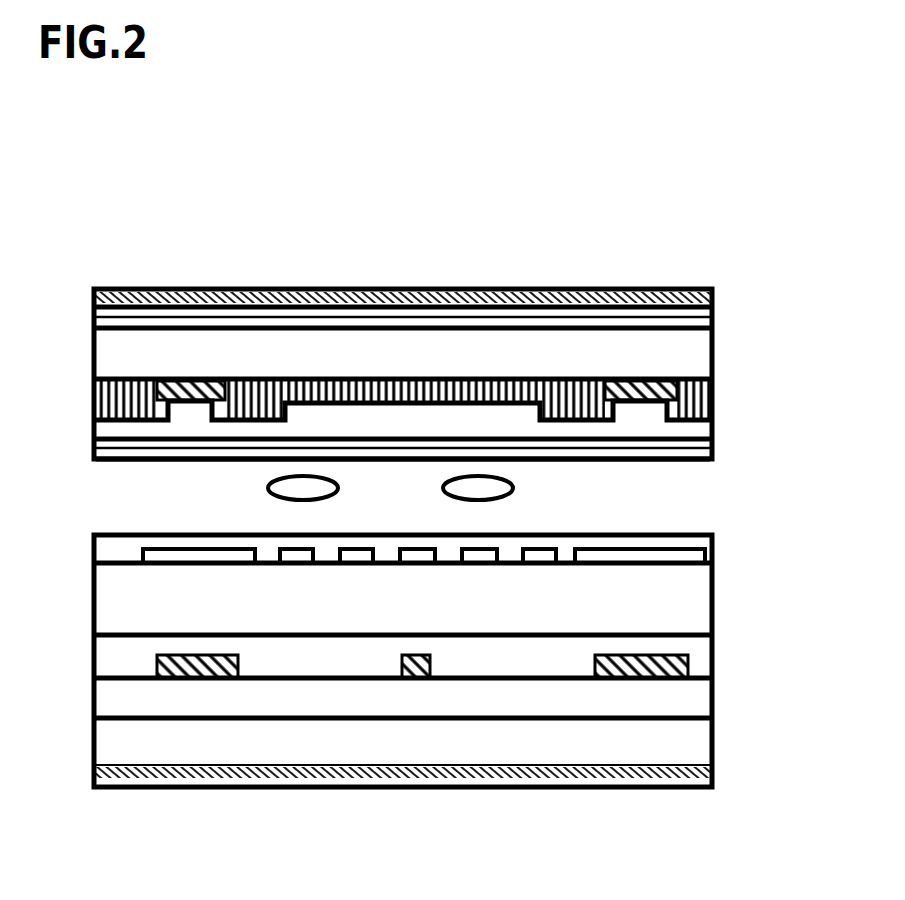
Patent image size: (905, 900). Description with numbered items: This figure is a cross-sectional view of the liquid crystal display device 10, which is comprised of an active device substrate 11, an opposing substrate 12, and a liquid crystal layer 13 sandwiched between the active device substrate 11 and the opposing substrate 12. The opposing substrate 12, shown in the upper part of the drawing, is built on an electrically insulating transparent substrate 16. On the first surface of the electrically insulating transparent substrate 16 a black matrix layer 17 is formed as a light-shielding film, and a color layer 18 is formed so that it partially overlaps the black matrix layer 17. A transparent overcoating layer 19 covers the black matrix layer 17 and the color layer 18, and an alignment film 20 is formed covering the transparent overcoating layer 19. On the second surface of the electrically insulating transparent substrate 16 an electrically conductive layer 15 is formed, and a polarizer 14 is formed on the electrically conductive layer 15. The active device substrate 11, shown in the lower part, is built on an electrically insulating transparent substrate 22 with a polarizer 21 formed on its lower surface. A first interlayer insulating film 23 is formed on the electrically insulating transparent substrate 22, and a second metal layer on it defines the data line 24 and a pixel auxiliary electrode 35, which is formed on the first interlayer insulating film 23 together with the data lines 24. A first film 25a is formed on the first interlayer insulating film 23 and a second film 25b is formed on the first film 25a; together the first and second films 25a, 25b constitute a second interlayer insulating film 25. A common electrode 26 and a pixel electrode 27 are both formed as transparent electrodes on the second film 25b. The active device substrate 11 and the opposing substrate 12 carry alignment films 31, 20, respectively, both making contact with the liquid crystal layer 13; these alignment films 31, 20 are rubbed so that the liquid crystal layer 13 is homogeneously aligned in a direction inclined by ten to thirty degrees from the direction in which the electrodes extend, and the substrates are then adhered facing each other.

The liquid crystal display device 10 is at (100, 189).
The active device substrate 11 is at (68, 535).
The opposing substrate 12 is at (76, 287).
The liquid crystal layer 13 is at (68, 460).
The polarizer 14 is at (702, 303).
The electrically conductive layer 15 is at (702, 326).
The electrically insulating transparent substrate 16 is at (702, 358).
The black matrix layer 17 is at (200, 379).
The color layer 18 is at (132, 379).
The transparent overcoating layer 19 is at (702, 432).
The alignment film 20 is at (702, 461).
The polarizer 21 is at (702, 778).
The electrically insulating transparent substrate 22 is at (702, 750).
The first interlayer insulating film 23 is at (702, 715).
The data line 24 is at (633, 672).
The second interlayer insulating film 25 is at (817, 585).
The first film 25a is at (702, 648).
The second film 25b is at (702, 603).
The common electrode 26 is at (203, 555).
The pixel electrode 27 is at (300, 555).
The alignment film 31 is at (702, 558).
The pixel auxiliary electrode 35 is at (413, 672).